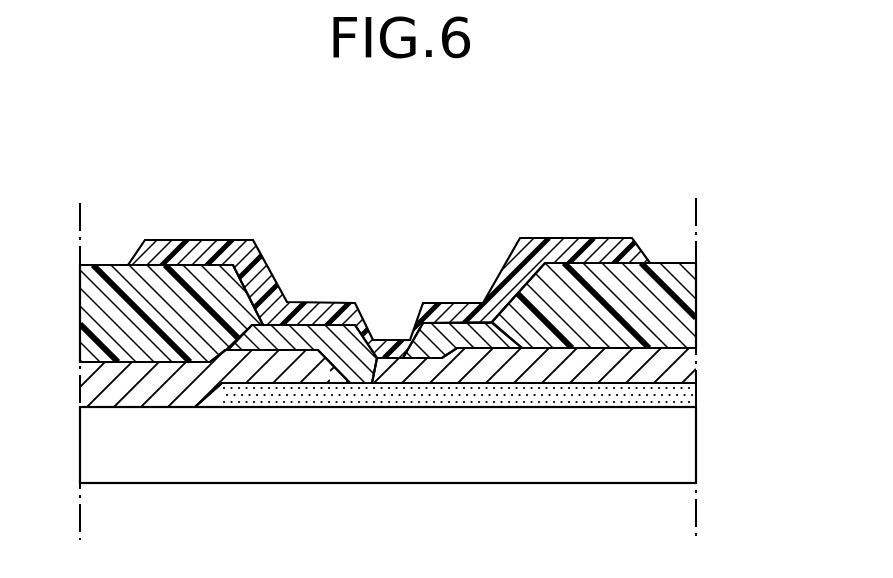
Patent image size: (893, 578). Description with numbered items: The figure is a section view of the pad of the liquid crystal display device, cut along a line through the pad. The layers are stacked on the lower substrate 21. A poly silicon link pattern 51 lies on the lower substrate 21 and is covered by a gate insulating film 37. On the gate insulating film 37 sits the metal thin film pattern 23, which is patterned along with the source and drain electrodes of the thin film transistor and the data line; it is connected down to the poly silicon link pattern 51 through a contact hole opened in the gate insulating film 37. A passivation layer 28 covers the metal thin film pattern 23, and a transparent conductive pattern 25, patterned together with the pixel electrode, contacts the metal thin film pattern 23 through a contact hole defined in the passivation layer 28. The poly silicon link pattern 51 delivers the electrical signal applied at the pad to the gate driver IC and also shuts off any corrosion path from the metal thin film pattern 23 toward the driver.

The lower substrate 21 is at (683, 448).
The poly silicon link pattern 51 is at (508, 393).
The gate insulating film 37 is at (696, 360).
The metal thin film pattern 23 is at (443, 337).
The passivation layer 28 is at (696, 300).
The transparent conductive pattern 25 is at (573, 237).